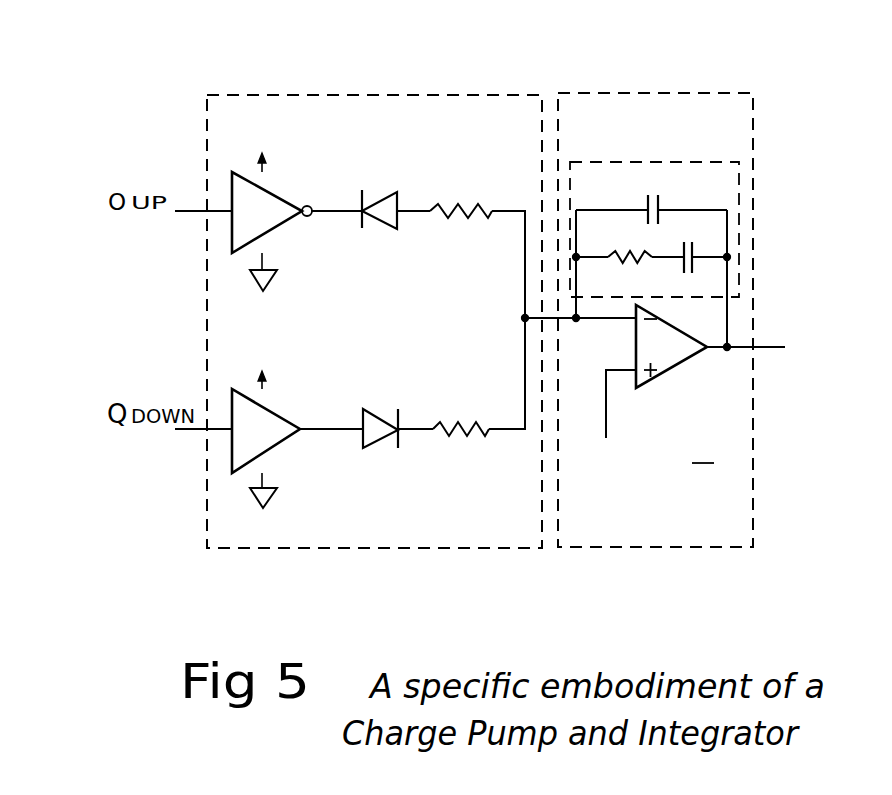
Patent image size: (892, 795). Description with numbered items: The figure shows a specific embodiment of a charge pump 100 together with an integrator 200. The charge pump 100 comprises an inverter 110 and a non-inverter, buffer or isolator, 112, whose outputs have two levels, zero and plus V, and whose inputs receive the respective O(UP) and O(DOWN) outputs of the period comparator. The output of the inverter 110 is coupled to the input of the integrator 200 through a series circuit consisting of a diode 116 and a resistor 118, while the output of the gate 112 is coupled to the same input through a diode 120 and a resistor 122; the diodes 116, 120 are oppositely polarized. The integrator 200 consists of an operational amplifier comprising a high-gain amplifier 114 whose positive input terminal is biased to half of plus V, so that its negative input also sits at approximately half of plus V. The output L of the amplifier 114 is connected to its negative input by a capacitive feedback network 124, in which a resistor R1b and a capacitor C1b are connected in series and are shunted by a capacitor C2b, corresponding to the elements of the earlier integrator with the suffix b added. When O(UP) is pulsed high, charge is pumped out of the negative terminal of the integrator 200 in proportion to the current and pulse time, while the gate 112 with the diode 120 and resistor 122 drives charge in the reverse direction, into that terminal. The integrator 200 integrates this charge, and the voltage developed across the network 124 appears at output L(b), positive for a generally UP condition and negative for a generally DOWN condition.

The charge pump 100 is at (293, 95).
The integrator 200 is at (588, 93).
The inverter 110 is at (270, 190).
The non-inverter (buffer or isolator) 112 is at (282, 445).
The high-gain amplifier 114 is at (678, 367).
The diode 116 is at (390, 190).
The resistor 118 is at (462, 200).
The diode 120 is at (377, 443).
The resistor 122 is at (463, 437).
The capacitive feedback network 124 is at (654, 233).
The capacitor C2b is at (651, 197).
The resistor R1b is at (630, 273).
The capacitor C1b is at (698, 271).